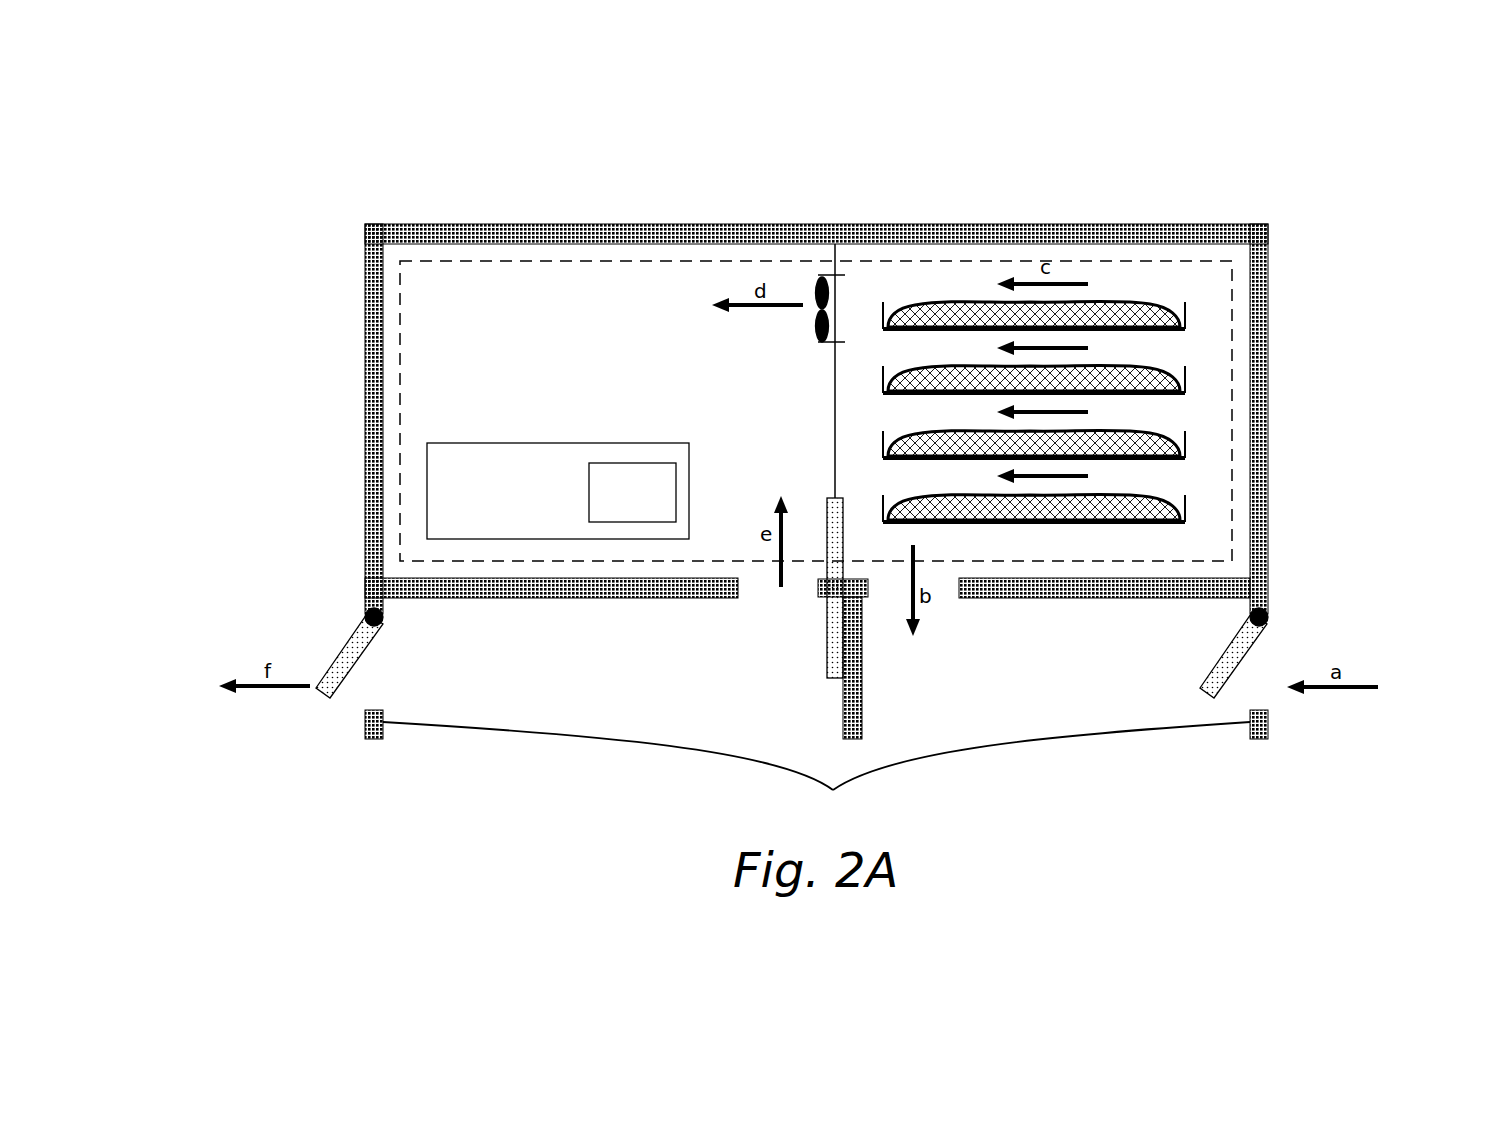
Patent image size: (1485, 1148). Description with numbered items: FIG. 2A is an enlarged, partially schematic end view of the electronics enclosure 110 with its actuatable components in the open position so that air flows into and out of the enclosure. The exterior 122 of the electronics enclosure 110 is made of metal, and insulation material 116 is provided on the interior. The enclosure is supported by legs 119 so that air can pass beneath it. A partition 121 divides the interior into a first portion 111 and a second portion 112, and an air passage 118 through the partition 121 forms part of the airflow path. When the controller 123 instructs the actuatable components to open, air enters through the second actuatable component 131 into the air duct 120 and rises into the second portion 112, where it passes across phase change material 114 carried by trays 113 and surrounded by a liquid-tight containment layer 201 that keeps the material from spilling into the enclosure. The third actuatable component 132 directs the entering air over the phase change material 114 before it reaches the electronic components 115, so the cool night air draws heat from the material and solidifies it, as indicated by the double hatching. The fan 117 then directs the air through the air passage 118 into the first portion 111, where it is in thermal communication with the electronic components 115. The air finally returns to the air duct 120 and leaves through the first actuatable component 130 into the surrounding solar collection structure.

The electronics enclosure 110 is at (754, 160).
The first portion 111 is at (437, 280).
The second portion 112 is at (1205, 278).
The trays 113 is at (1185, 500).
The phase change material 114 is at (972, 308).
The electronic components 115 is at (558, 455).
The insulation material 116 is at (520, 262).
The fan 117 is at (835, 287).
The air passage 118 is at (862, 558).
The legs 119 is at (845, 712).
The air duct 120 is at (414, 618).
The partition 121 is at (837, 368).
The exterior 122 is at (365, 320).
The controller 123 is at (636, 463).
The first actuatable component 130 is at (341, 655).
The second actuatable component 131 is at (1245, 655).
The third actuatable component 132 is at (827, 648).
The liquid-tight containment layer 201 is at (1120, 300).